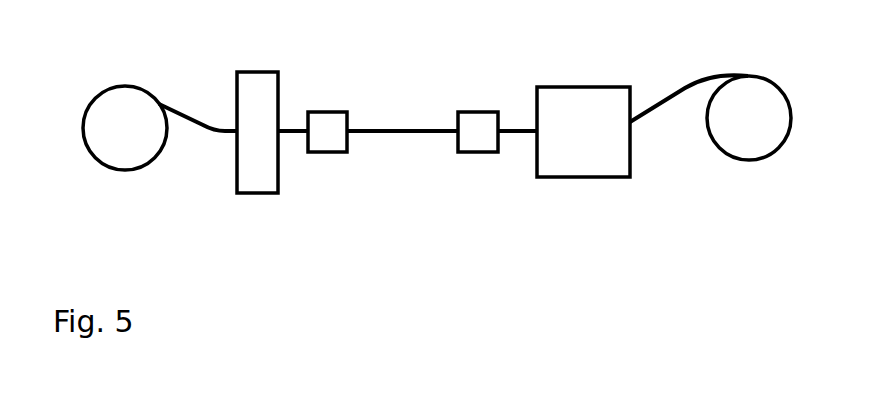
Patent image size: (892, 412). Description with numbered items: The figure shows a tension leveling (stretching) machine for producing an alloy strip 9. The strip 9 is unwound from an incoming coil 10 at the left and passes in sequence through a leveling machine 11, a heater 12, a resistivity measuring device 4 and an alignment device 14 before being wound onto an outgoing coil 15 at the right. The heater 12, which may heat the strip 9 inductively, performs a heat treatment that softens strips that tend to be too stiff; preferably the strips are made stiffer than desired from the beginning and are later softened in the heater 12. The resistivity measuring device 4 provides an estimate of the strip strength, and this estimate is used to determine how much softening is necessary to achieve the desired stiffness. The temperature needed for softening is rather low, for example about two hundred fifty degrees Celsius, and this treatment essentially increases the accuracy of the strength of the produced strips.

The incoming coil 10 is at (117, 157).
The leveling machine 11 is at (257, 180).
The heater 12 is at (327, 142).
The alloy strip 9 is at (405, 133).
The resistivity measuring device 4 is at (477, 140).
The alignment device 14 is at (585, 163).
The outgoing coil 15 is at (760, 138).